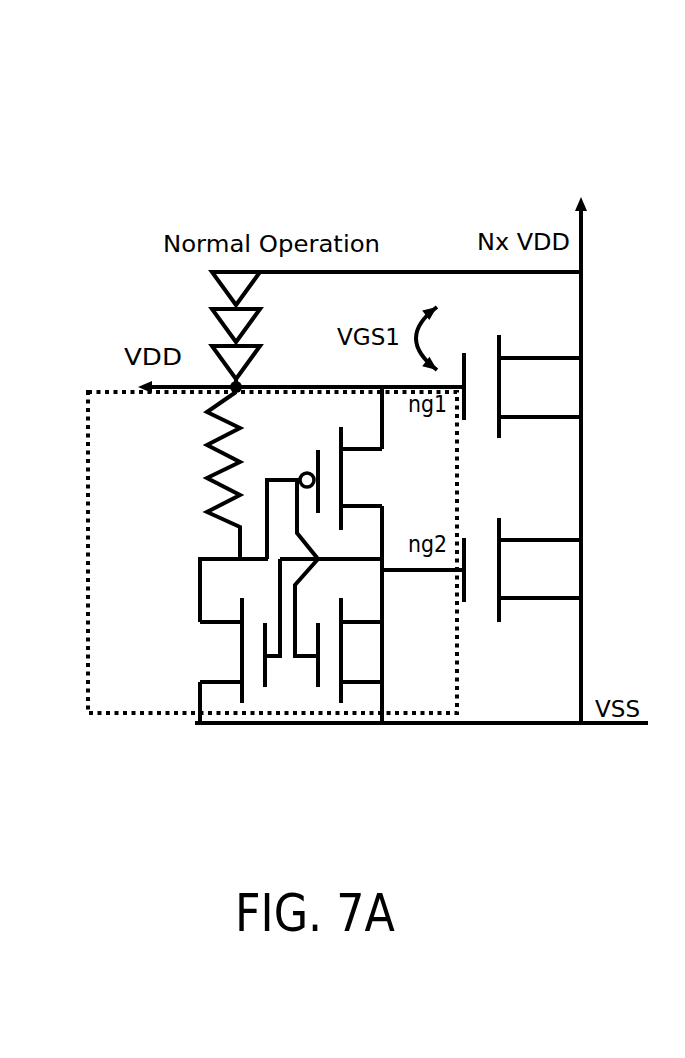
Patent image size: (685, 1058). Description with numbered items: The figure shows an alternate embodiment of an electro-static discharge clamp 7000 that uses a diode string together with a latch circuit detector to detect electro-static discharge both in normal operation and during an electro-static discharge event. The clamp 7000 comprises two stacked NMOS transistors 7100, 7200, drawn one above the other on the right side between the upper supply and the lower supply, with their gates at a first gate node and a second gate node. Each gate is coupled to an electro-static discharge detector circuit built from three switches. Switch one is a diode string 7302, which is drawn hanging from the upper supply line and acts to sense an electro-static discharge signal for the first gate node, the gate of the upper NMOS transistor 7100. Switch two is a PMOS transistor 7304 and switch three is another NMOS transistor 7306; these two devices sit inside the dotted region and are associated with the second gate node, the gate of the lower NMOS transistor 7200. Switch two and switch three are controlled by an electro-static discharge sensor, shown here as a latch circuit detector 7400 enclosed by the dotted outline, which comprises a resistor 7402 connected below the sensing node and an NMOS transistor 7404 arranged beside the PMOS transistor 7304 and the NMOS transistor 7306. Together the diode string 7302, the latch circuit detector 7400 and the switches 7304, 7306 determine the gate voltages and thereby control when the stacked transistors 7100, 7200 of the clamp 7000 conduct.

The electro-static discharge clamp 7000 is at (606, 150).
The NMOS transistor 7100 is at (545, 386).
The NMOS transistor 7200 is at (545, 570).
The diode string 7302 is at (264, 332).
The PMOS transistor 7304 is at (336, 493).
The NMOS transistor 7306 is at (350, 591).
The latch circuit detector 7400 is at (238, 552).
The resistor 7402 is at (188, 475).
The NMOS transistor 7404 is at (207, 640).